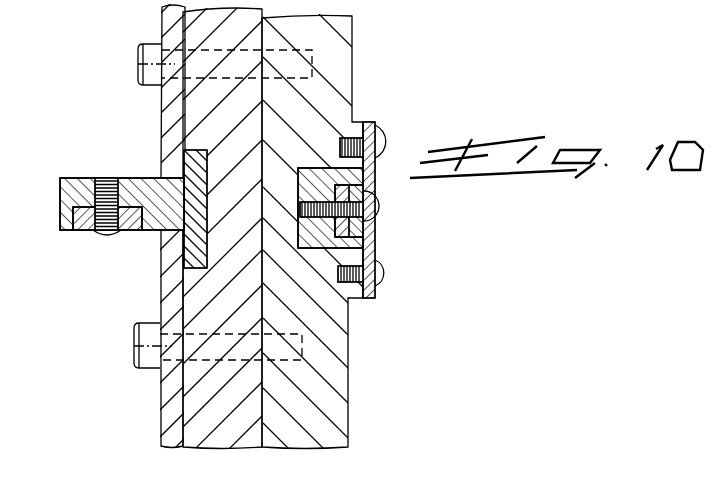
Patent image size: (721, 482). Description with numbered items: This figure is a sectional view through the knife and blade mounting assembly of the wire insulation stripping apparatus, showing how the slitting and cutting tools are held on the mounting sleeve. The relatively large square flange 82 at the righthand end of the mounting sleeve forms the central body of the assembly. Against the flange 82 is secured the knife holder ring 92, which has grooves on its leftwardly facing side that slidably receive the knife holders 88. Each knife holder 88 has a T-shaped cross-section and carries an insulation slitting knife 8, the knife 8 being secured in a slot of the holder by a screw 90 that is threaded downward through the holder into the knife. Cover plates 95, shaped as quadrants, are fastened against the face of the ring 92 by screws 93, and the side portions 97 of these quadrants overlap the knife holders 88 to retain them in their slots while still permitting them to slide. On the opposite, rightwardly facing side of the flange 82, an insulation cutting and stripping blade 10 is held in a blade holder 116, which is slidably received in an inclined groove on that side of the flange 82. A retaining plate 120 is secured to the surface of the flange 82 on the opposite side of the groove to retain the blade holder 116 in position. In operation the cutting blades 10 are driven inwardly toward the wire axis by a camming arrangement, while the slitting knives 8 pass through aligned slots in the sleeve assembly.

The insulation slitting knife 8 is at (75, 230).
The insulation cutting and stripping blade 10 is at (330, 240).
The square flange 82 is at (322, 405).
The knife holder 88 is at (157, 215).
The screw 90 is at (105, 178).
The knife holder ring 92 is at (190, 408).
The screw 93 is at (147, 63).
The cover plate 95 is at (162, 115).
The side portion 97 is at (175, 252).
The blade holder 116 is at (373, 245).
The retaining plate 120 is at (373, 123).